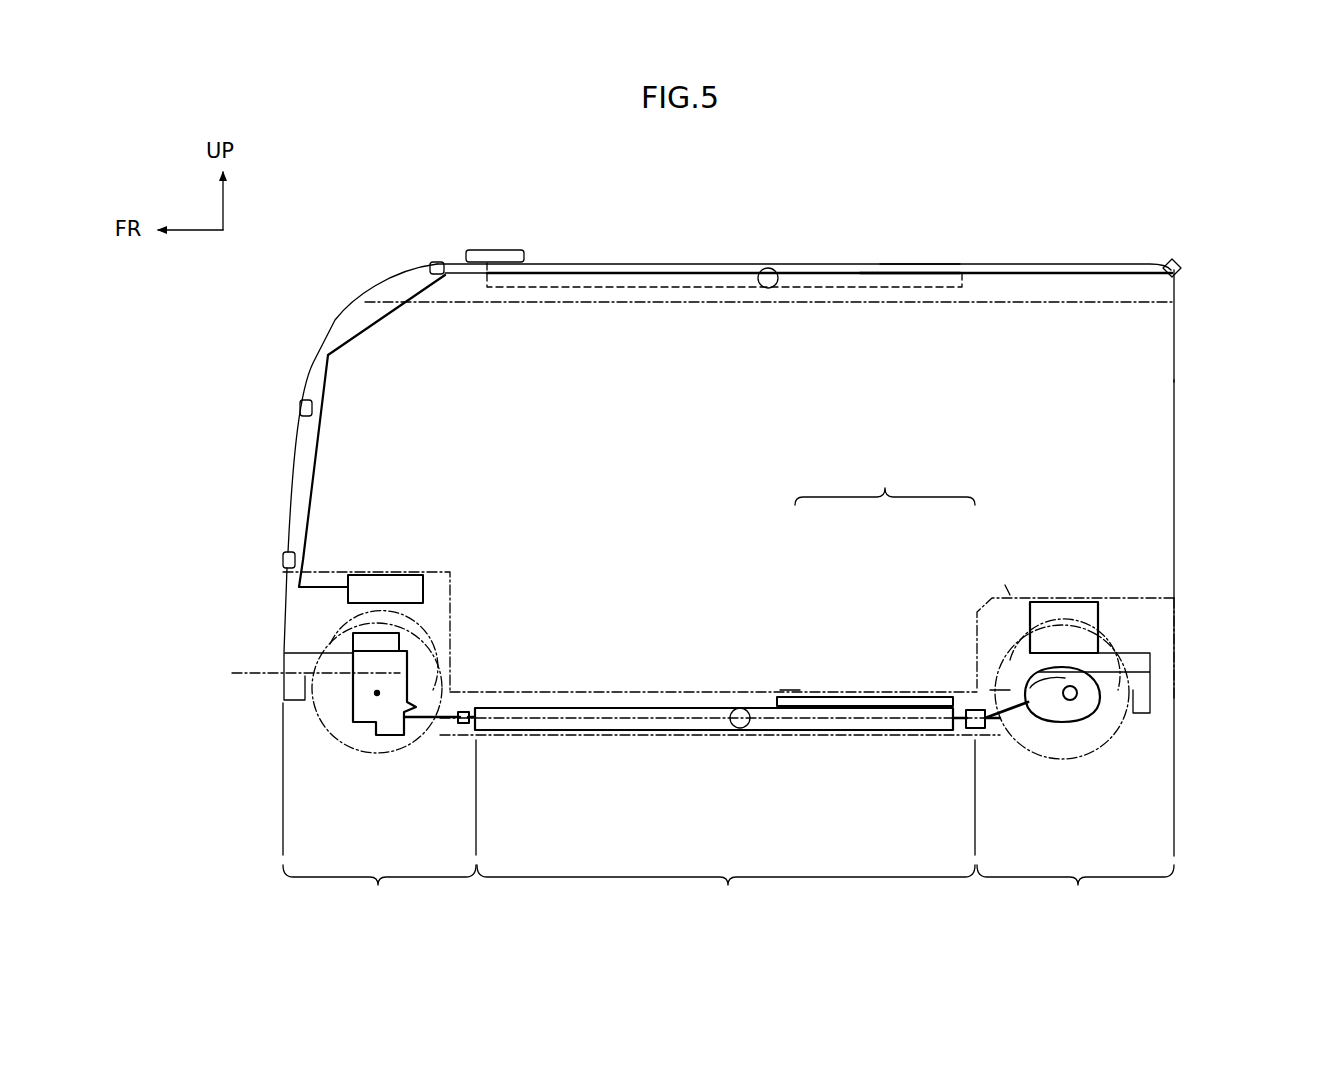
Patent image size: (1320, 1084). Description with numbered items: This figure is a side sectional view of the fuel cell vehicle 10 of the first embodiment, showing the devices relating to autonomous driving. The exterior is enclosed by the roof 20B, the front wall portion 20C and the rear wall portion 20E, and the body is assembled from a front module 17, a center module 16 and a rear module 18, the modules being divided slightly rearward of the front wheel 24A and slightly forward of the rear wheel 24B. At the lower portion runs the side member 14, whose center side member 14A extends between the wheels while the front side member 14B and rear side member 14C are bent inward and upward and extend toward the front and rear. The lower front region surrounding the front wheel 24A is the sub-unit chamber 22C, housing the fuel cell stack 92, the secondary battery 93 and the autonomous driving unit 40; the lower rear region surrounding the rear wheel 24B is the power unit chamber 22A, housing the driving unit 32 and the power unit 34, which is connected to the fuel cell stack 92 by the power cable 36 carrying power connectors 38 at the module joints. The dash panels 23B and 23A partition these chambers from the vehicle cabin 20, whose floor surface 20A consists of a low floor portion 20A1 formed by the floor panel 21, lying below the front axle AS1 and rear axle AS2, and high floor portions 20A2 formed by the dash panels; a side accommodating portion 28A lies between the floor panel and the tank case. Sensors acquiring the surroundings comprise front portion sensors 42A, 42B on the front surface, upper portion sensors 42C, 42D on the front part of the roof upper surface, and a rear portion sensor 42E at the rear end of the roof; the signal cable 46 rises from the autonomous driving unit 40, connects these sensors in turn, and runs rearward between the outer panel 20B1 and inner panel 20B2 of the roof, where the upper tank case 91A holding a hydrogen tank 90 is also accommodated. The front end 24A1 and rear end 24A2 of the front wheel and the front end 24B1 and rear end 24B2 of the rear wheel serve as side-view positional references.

The vehicle 10 is at (1037, 230).
The vehicle cabin 20 is at (1093, 335).
The floor surface 20A is at (885, 477).
The low floor portion 20A1 is at (780, 690).
The high floor portions 20A2 is at (1010, 592).
The roof 20B is at (843, 262).
The outer panel 20B1 is at (913, 262).
The inner panel 20B2 is at (915, 288).
The front wall portion 20C is at (292, 487).
The rear wall portion 20E is at (1177, 382).
The signal cable 46 is at (1020, 275).
The upper tank case 91A is at (585, 288).
The hydrogen tank 90 is at (766, 290).
The front portion sensor 42A is at (283, 560).
The front portion sensor 42B is at (300, 408).
The upper portion sensor 42C is at (430, 264).
The upper portion sensor 42D is at (494, 250).
The rear portion sensor 42E is at (1176, 260).
The dash panel 23B is at (313, 573).
The dash panel 23A is at (1158, 597).
The autonomous driving unit 40 is at (386, 590).
The sub-unit chamber 22C is at (442, 583).
The power unit chamber 22A is at (1152, 636).
The secondary battery 93 is at (401, 638).
The fuel cell stack 92 is at (377, 694).
The axle AS1 is at (448, 636).
The axle AS2 is at (1065, 700).
The side member 14 is at (460, 723).
The center side member 14A is at (667, 703).
The front side member 14B is at (297, 654).
The rear side member 14C is at (1135, 665).
The front wheel 24A is at (398, 750).
The front end 24A1 is at (313, 691).
The rear end 24A2 is at (440, 688).
The rear wheel 24B is at (1065, 754).
The front end 24B1 is at (990, 690).
The rear end 24B2 is at (1134, 692).
The floor panel 21 is at (530, 690).
The side accommodating portion 28A is at (808, 700).
The power connector 38 is at (470, 724).
The power cable 36 is at (994, 726).
The driving unit 32 is at (1086, 712).
The power unit 34 is at (1072, 610).
The front module 17 is at (379, 811).
The center module 16 is at (726, 830).
The rear module 18 is at (1075, 892).